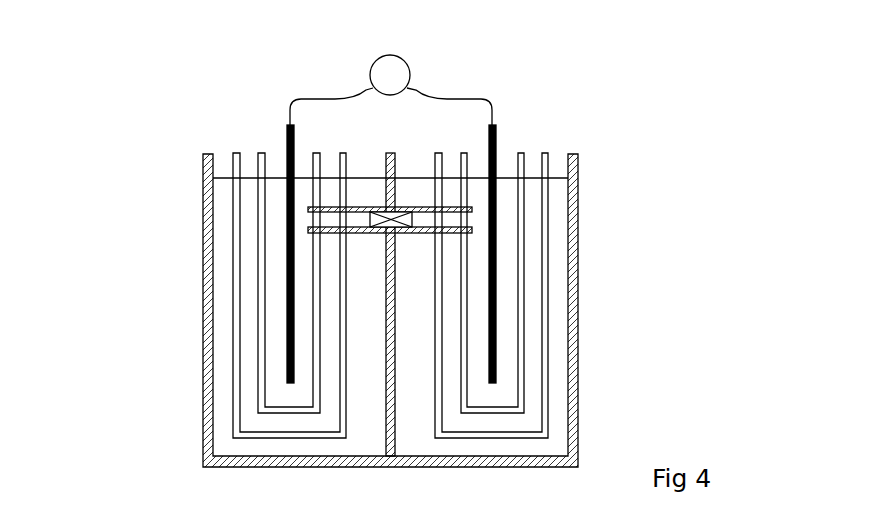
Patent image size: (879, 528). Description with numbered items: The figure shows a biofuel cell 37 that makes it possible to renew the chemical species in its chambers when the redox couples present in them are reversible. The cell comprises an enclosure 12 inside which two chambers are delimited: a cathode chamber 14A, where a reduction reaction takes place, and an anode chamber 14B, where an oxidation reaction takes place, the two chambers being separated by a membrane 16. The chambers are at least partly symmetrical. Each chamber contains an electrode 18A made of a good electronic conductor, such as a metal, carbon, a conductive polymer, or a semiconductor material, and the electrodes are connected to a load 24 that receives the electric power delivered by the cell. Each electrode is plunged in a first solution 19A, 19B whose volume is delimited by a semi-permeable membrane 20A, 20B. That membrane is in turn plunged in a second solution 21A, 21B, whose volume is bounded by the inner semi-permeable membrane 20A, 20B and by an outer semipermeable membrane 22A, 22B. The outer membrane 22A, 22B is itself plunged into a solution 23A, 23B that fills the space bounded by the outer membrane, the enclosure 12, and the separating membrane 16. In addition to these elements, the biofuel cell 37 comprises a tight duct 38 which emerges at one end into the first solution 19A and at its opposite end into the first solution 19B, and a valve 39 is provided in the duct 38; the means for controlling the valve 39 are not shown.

The enclosure 12 is at (578, 203).
The cathode chamber 14A is at (273, 443).
The anode chamber 14B is at (495, 443).
The membrane 16 is at (388, 447).
The electrode 18A is at (287, 127).
The first solution 19A is at (303, 190).
The first solution 19B is at (478, 190).
The semi-permeable membrane 20A is at (260, 153).
The semi-permeable membrane 20B is at (520, 153).
The second solution 21A is at (323, 187).
The second solution 21B is at (455, 190).
The semipermeable membrane 22A is at (237, 153).
The semipermeable membrane 22B is at (548, 247).
The solution 23A is at (323, 448).
The solution 23B is at (558, 385).
The load 24 is at (410, 69).
The biofuel cell 37 is at (602, 62).
The tight duct 38 is at (412, 228).
The valve 39 is at (415, 207).